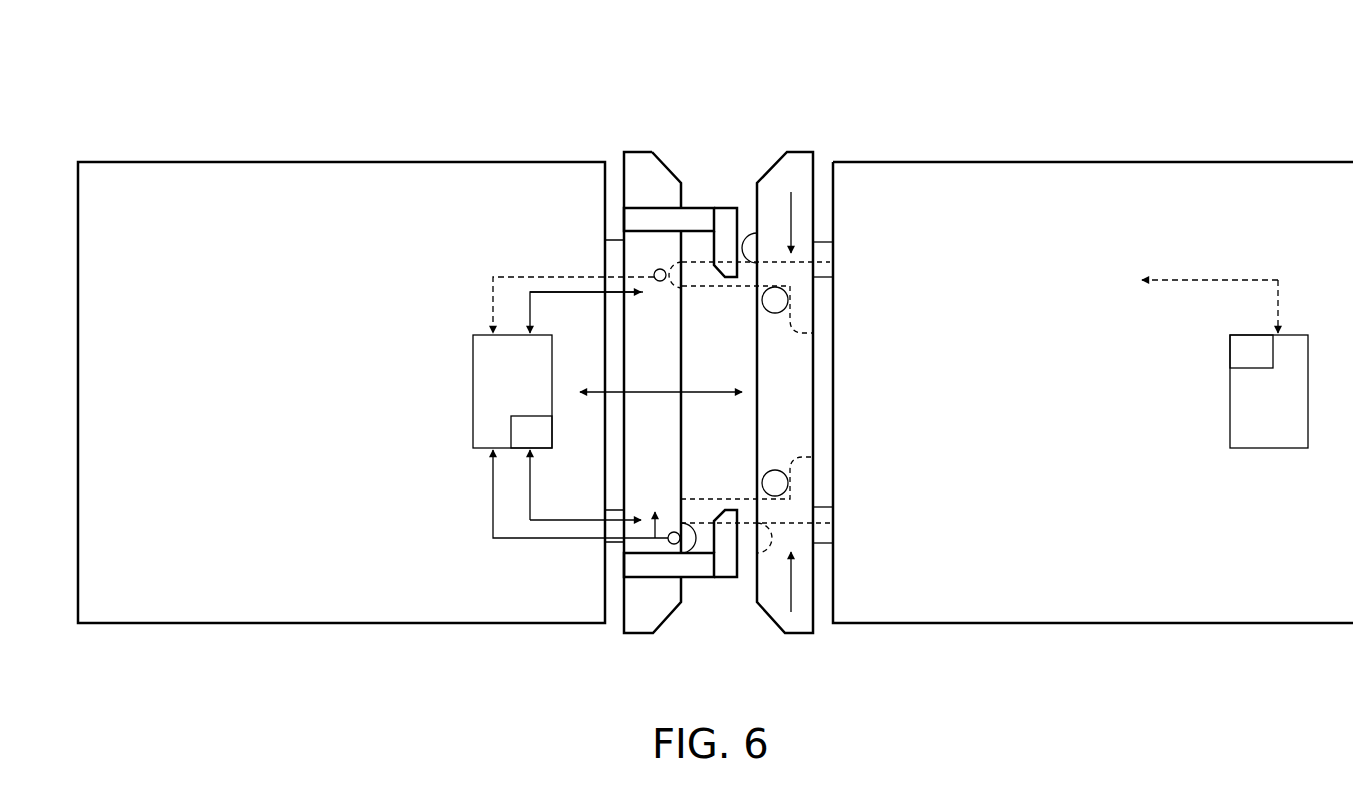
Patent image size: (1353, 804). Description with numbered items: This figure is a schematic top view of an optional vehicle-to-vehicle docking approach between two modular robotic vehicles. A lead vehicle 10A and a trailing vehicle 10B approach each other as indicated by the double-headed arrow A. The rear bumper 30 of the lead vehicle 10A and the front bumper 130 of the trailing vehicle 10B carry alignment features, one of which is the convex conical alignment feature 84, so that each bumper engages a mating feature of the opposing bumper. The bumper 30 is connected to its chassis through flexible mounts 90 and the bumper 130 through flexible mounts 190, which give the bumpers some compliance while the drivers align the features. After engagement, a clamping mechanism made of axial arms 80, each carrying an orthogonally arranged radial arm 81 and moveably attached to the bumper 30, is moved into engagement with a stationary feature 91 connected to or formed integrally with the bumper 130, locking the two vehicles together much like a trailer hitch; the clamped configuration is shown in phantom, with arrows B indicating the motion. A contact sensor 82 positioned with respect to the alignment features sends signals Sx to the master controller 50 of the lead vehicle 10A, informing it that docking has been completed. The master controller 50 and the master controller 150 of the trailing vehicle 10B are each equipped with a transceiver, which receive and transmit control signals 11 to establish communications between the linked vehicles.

The lead vehicle 10A is at (364, 406).
The trailing vehicle 10B is at (1121, 406).
The control signals 11 is at (536, 298).
The bumper 30 is at (643, 152).
The master controller 50 is at (526, 397).
The axial arm 80 is at (698, 578).
The radial arm 81 is at (730, 208).
The contact sensor 82 is at (659, 282).
The alignment feature 84 is at (745, 233).
The flexible mount 90 is at (612, 256).
The stationary feature 91 is at (778, 313).
The front bumper 130 is at (790, 152).
The master controller 150 is at (1288, 420).
The flexible mount 190 is at (823, 262).
The double-headed arrow A is at (692, 390).
The arrow B is at (796, 208).
The signals Sx is at (518, 275).